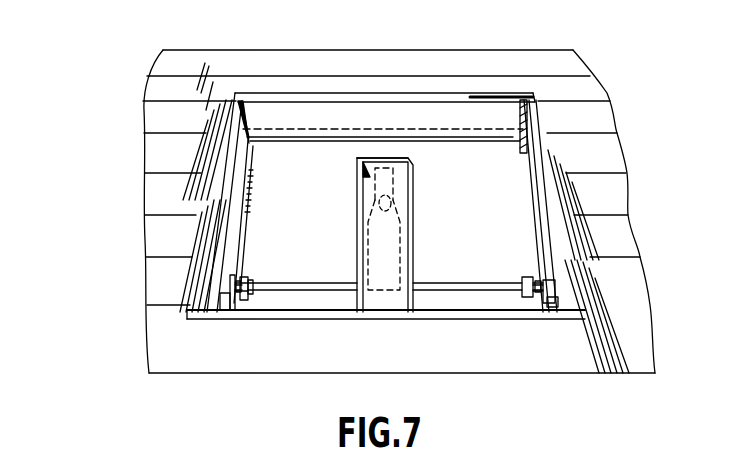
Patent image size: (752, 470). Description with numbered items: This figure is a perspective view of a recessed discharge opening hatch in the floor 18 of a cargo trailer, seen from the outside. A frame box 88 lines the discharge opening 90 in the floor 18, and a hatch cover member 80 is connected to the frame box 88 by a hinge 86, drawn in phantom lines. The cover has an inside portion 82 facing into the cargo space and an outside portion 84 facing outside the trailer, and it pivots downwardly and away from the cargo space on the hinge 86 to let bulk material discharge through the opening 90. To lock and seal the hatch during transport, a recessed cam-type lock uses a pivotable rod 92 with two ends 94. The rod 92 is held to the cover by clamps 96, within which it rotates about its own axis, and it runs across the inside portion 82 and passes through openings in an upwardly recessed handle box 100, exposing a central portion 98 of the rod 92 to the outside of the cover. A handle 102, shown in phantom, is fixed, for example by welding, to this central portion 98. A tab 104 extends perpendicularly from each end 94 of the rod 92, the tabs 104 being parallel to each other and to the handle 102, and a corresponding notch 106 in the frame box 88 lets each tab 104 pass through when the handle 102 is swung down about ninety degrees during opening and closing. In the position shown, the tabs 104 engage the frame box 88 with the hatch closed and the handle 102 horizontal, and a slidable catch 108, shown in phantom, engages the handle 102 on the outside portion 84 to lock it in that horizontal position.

The floor 18 is at (630, 280).
The hatch cover member 80 is at (513, 236).
The inside portion 82 is at (507, 168).
The outside portion 84 is at (362, 166).
The hinge 86 is at (277, 128).
The frame box 88 is at (506, 114).
The discharge opening 90 is at (510, 203).
The pivotable rod 92 is at (464, 291).
The rod ends 94 is at (230, 291).
The clamps 96 is at (251, 294).
The central portion of rod 98 is at (382, 292).
The handle box 100 is at (405, 224).
The handle 102 is at (394, 182).
The tab 104 is at (228, 288).
The notch 106 is at (232, 279).
The slidable catch 108 is at (378, 219).